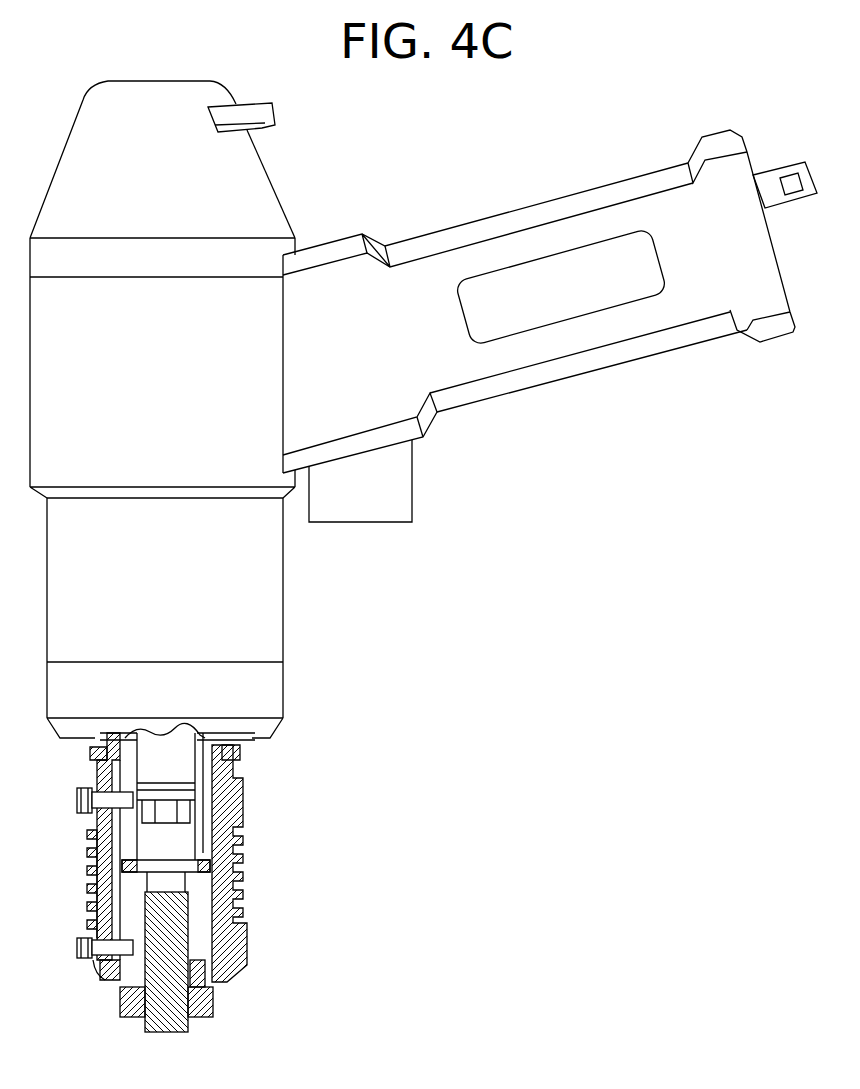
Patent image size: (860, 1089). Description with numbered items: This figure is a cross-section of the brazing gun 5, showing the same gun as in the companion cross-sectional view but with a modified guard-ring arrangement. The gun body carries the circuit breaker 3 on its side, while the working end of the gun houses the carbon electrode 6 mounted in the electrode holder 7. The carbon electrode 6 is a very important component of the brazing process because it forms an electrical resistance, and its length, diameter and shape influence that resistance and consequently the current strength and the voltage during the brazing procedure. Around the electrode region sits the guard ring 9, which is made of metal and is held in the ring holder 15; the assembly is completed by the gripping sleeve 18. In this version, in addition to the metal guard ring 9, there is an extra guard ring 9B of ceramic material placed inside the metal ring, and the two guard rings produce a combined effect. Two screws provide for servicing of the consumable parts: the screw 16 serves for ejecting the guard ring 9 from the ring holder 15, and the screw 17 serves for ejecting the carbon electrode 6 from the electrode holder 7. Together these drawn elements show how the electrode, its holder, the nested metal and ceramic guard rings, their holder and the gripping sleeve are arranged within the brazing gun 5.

The circuit breaker 3 is at (398, 488).
The brazing gun 5 is at (267, 583).
The carbon electrode 6 is at (188, 1025).
The electrode holder 7 is at (172, 838).
The guard ring 9 is at (213, 1002).
The extra guard ring 9B is at (120, 982).
The ring holder 15 is at (222, 985).
The screw for ejecting the guard ring 16 is at (102, 968).
The screw for ejecting the electrode 17 is at (107, 798).
The gripping sleeve 18 is at (235, 932).